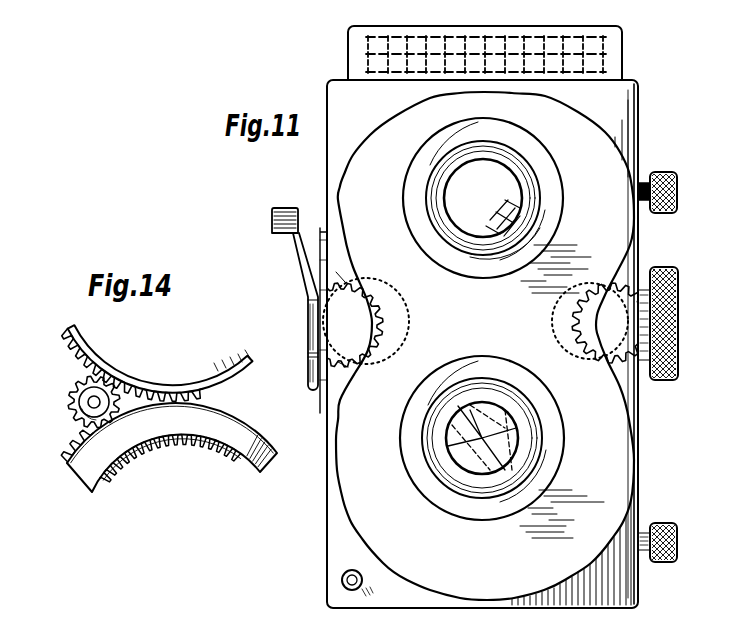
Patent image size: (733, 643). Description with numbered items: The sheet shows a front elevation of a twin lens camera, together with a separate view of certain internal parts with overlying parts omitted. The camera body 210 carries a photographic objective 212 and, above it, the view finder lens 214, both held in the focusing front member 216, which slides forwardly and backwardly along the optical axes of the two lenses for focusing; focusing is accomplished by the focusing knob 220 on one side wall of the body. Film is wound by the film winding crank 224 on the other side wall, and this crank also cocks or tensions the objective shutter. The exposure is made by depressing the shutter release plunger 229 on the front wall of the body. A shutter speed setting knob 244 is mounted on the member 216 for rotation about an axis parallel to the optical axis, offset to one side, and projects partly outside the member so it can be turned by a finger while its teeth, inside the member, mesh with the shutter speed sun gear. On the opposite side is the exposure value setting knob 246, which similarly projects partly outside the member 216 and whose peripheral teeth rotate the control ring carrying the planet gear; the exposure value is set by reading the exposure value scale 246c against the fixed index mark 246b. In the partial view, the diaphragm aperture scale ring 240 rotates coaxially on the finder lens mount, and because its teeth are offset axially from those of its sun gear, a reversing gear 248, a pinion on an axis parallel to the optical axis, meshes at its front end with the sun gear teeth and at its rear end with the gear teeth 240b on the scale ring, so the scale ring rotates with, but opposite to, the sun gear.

In FIG. 11, the camera body 210 is at (330, 580).
In FIG. 11, the photographic objective 212 is at (502, 460).
In FIG. 11, the view finder lens 214 is at (508, 180).
In FIG. 11, the focusing front member 216 is at (340, 183).
In FIG. 11, the focusing knob 220 is at (661, 268).
In FIG. 11, the film winding crank 224 is at (310, 347).
In FIG. 11, the shutter release plunger 229 is at (361, 584).
In FIG. 11, the shutter speed setting knob 244 is at (612, 335).
In FIG. 11, the exposure value setting knob 246 is at (355, 325).
In FIG. 11, the fixed index mark 246b is at (395, 258).
In FIG. 11, the exposure value scale 246c is at (342, 362).
In FIG. 14, the diaphragm aperture scale ring 240 is at (96, 355).
In FIG. 14, the gear teeth on the scale ring 240b is at (86, 371).
In FIG. 14, the reversing gear 248 is at (86, 409).